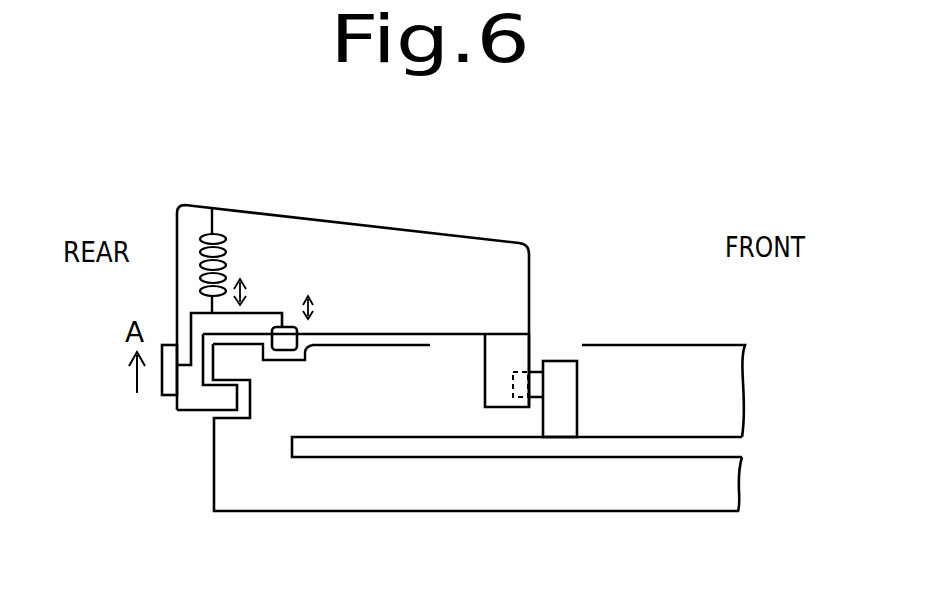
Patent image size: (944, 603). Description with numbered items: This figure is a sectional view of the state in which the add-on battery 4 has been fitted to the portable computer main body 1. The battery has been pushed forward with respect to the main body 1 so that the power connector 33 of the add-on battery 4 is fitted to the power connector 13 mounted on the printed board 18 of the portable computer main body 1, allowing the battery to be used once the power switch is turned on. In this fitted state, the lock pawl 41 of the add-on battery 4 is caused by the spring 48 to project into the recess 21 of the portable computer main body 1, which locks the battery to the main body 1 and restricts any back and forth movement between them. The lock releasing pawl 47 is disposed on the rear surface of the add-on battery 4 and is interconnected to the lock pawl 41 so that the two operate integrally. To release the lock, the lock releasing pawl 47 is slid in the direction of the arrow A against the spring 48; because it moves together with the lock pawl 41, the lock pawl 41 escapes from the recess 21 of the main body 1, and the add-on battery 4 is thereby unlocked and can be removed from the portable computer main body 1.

The portable computer main body 1 is at (633, 512).
The add-on battery 4 is at (448, 306).
The power connector 13 is at (563, 373).
The printed board 18 is at (700, 437).
The recess 21 is at (312, 334).
The power connector 33 is at (498, 395).
The lock pawl 41 is at (284, 352).
The lock releasing pawl 47 is at (162, 382).
The spring 48 is at (228, 250).